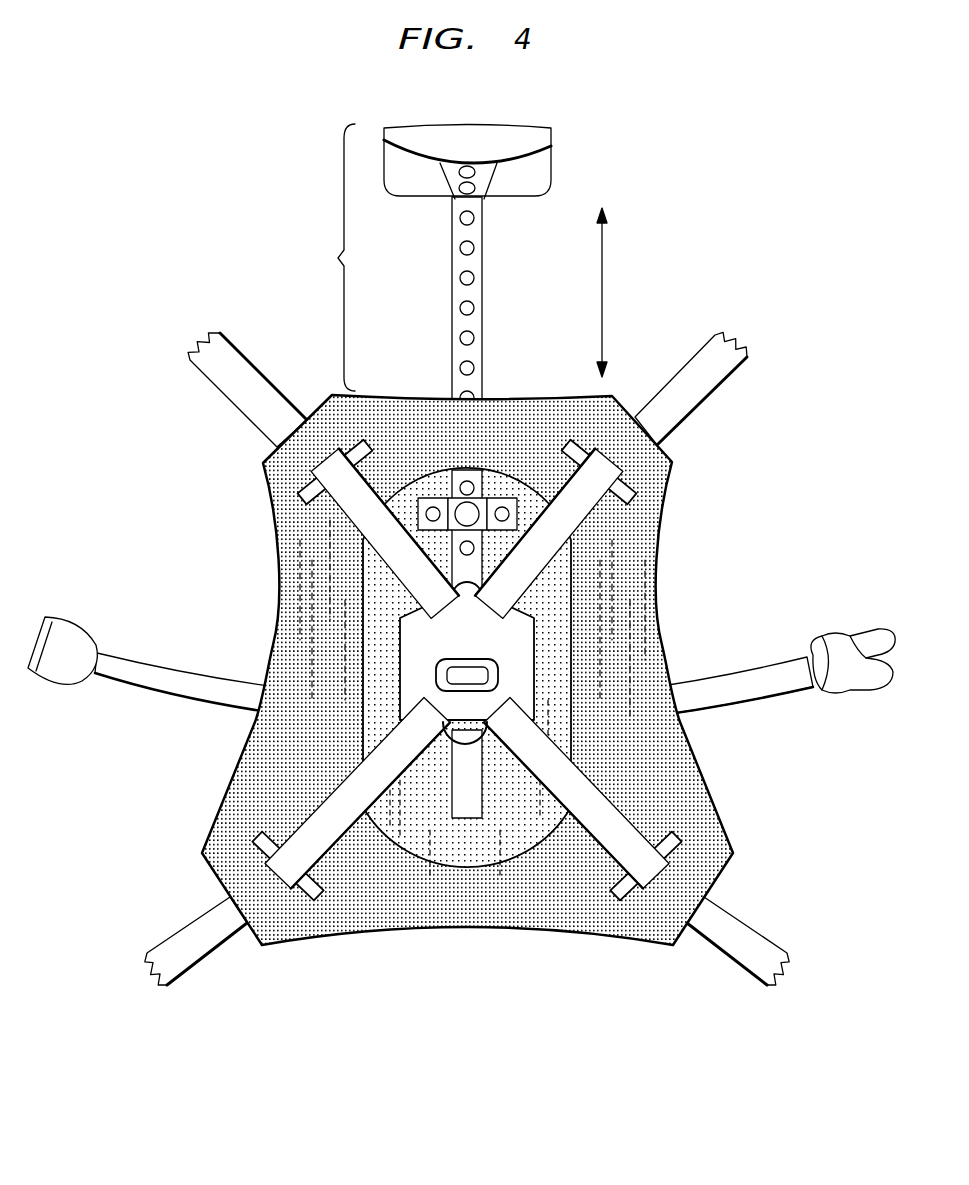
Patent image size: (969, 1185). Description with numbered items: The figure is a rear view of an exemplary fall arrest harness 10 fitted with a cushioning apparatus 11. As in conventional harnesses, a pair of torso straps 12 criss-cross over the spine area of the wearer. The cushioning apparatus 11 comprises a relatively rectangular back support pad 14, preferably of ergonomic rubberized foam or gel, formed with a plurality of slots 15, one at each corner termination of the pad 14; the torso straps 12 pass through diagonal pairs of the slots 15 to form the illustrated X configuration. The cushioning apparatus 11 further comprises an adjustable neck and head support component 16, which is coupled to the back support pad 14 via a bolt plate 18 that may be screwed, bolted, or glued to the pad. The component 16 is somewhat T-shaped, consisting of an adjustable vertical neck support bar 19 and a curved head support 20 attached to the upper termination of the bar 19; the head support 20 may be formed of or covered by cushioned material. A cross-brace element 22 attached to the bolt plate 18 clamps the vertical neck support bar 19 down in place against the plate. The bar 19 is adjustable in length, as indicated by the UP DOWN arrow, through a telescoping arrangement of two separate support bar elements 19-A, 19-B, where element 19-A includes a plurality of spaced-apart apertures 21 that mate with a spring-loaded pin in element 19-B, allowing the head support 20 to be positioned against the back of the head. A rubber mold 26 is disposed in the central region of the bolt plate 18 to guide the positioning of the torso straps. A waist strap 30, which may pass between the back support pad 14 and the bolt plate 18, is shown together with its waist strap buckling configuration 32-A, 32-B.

The fall arrest harness 10 is at (260, 180).
The cushioning apparatus 11 is at (122, 451).
The torso straps 12 is at (235, 386).
The back support pad 14 is at (662, 790).
The slots 15 is at (348, 450).
The adjustable neck and head support component 16 is at (336, 258).
The bolt plate 18 is at (553, 607).
The vertical neck support bar 19 is at (460, 323).
The support bar element 19-A is at (484, 290).
The support bar element 19-B is at (485, 800).
The curved head support 20 is at (543, 168).
The apertures 21 is at (459, 247).
The cross-brace element 22 is at (433, 498).
The rubber mold 26 is at (455, 648).
The waist strap 30 is at (188, 703).
The waist strap buckling configuration 32-A is at (49, 678).
The waist strap buckling configuration 32-B is at (838, 698).